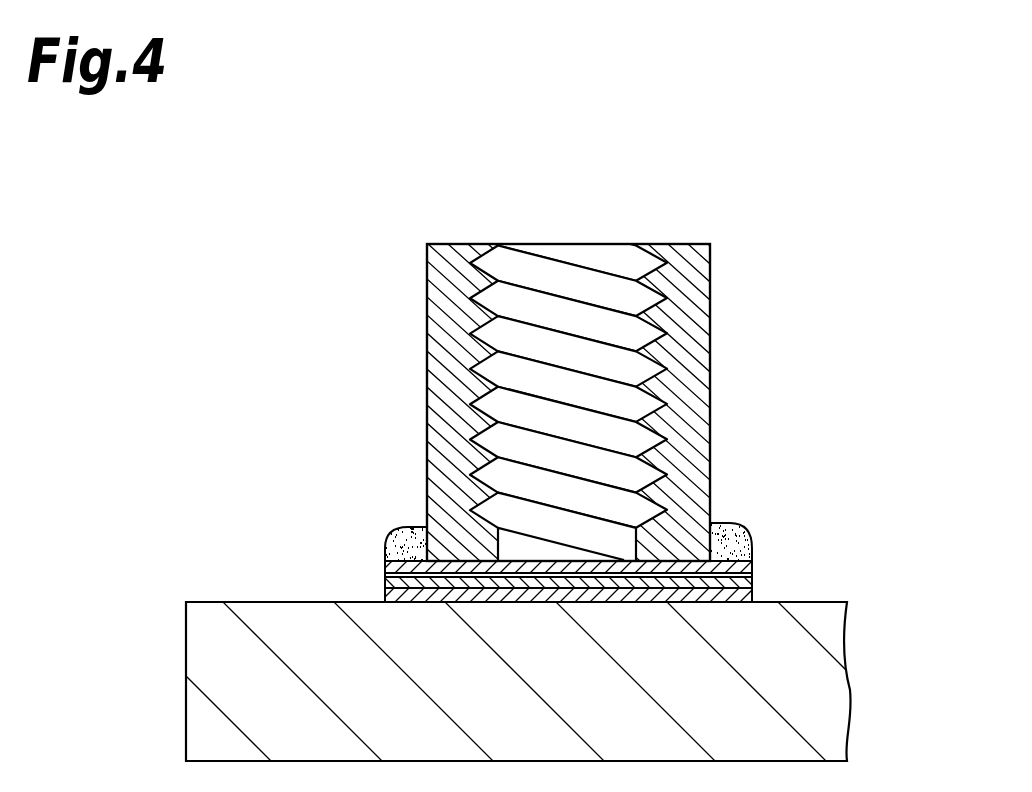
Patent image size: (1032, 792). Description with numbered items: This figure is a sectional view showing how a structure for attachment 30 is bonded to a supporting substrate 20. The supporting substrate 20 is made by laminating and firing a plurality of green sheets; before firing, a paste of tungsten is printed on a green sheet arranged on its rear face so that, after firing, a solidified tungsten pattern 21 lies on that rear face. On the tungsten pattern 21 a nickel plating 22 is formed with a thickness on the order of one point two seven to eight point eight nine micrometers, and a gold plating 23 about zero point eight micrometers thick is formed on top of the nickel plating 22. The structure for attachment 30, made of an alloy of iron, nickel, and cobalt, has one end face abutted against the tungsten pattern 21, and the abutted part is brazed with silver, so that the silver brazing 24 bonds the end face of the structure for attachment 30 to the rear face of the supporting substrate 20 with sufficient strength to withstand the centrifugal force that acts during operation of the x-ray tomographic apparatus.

The supporting substrate 20 is at (837, 690).
The tungsten pattern 21 is at (752, 591).
The nickel plating 22 is at (384, 580).
The gold plating 23 is at (752, 568).
The silver brazing 24 is at (400, 530).
The structure for attachment 30 is at (712, 349).